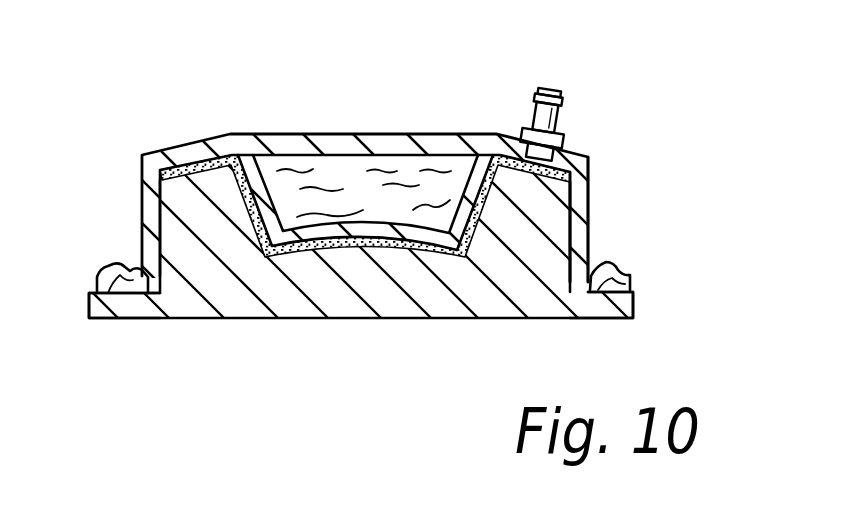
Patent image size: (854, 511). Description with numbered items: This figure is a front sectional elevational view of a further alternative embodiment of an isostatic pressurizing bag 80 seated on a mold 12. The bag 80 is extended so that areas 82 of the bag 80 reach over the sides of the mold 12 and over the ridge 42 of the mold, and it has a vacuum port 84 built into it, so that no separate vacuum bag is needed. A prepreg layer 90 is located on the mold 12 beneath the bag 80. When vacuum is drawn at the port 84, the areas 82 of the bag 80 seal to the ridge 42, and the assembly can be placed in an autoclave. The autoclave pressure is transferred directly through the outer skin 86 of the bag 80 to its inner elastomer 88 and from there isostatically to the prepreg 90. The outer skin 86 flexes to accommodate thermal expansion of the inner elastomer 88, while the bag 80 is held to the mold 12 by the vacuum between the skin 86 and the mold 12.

The mold 12 is at (297, 303).
The ridge 42 is at (118, 290).
The isostatic pressurizing bag 80 is at (407, 143).
The areas of the bag 82 is at (113, 266).
The vacuum port 84 is at (558, 118).
The outer skin 86 is at (287, 150).
The inner elastomer 88 is at (357, 180).
The prepreg layer 90 is at (588, 170).